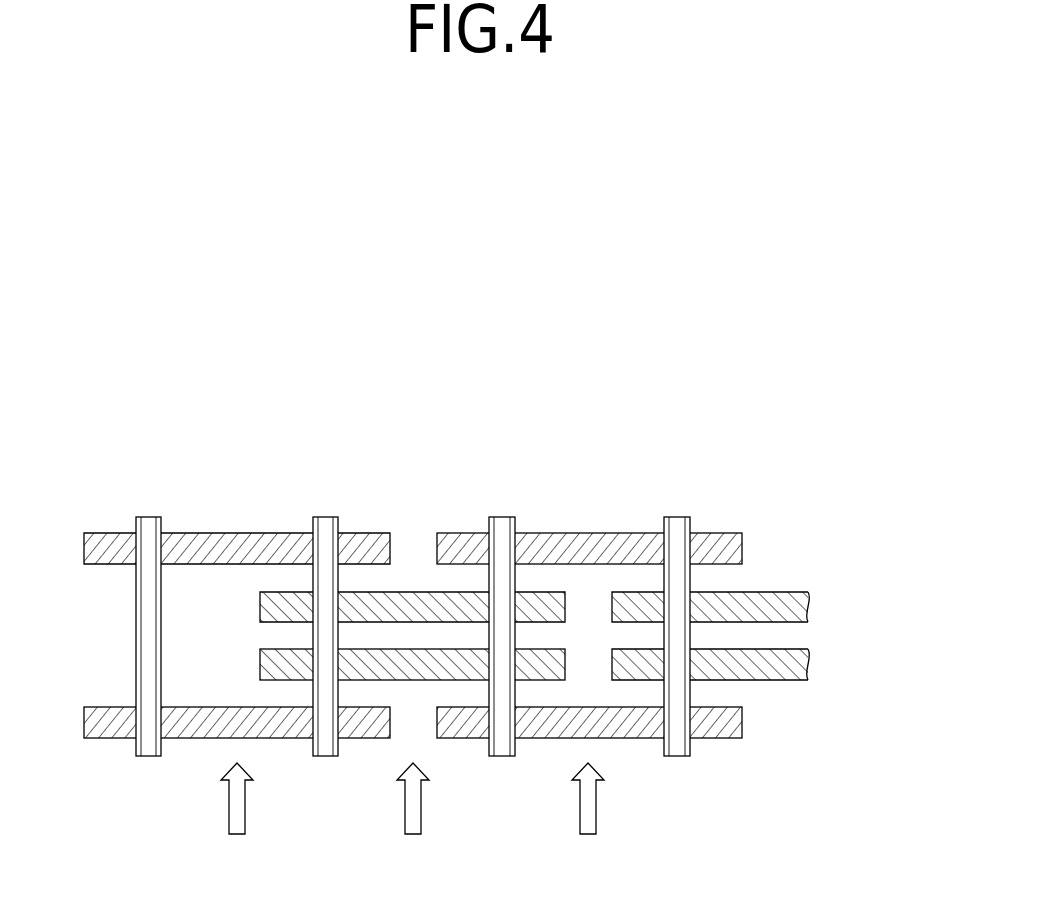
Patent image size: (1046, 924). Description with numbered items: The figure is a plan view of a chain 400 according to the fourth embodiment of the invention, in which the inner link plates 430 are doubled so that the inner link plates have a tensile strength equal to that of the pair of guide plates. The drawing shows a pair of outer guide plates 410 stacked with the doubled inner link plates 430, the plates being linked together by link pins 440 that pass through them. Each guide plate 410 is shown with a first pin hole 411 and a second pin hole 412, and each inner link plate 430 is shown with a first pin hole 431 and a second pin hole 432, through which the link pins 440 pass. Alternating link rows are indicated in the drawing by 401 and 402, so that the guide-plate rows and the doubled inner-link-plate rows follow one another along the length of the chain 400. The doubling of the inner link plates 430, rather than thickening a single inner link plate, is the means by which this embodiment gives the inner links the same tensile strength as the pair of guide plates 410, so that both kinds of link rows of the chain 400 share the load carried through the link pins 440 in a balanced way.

The chain 400 is at (679, 390).
The first fluid flow direction 401 is at (415, 818).
The second fluid flow direction 402 is at (415, 818).
The outer plate 410 is at (197, 533).
The first through hole of outer plate 411 is at (127, 545).
The second through hole of outer plate 412 is at (308, 535).
The inner link plate 430 is at (413, 607).
The first through hole of inner plate 431 is at (362, 600).
The second through hole of inner plate 432 is at (487, 597).
The pin / rod 440 is at (147, 757).